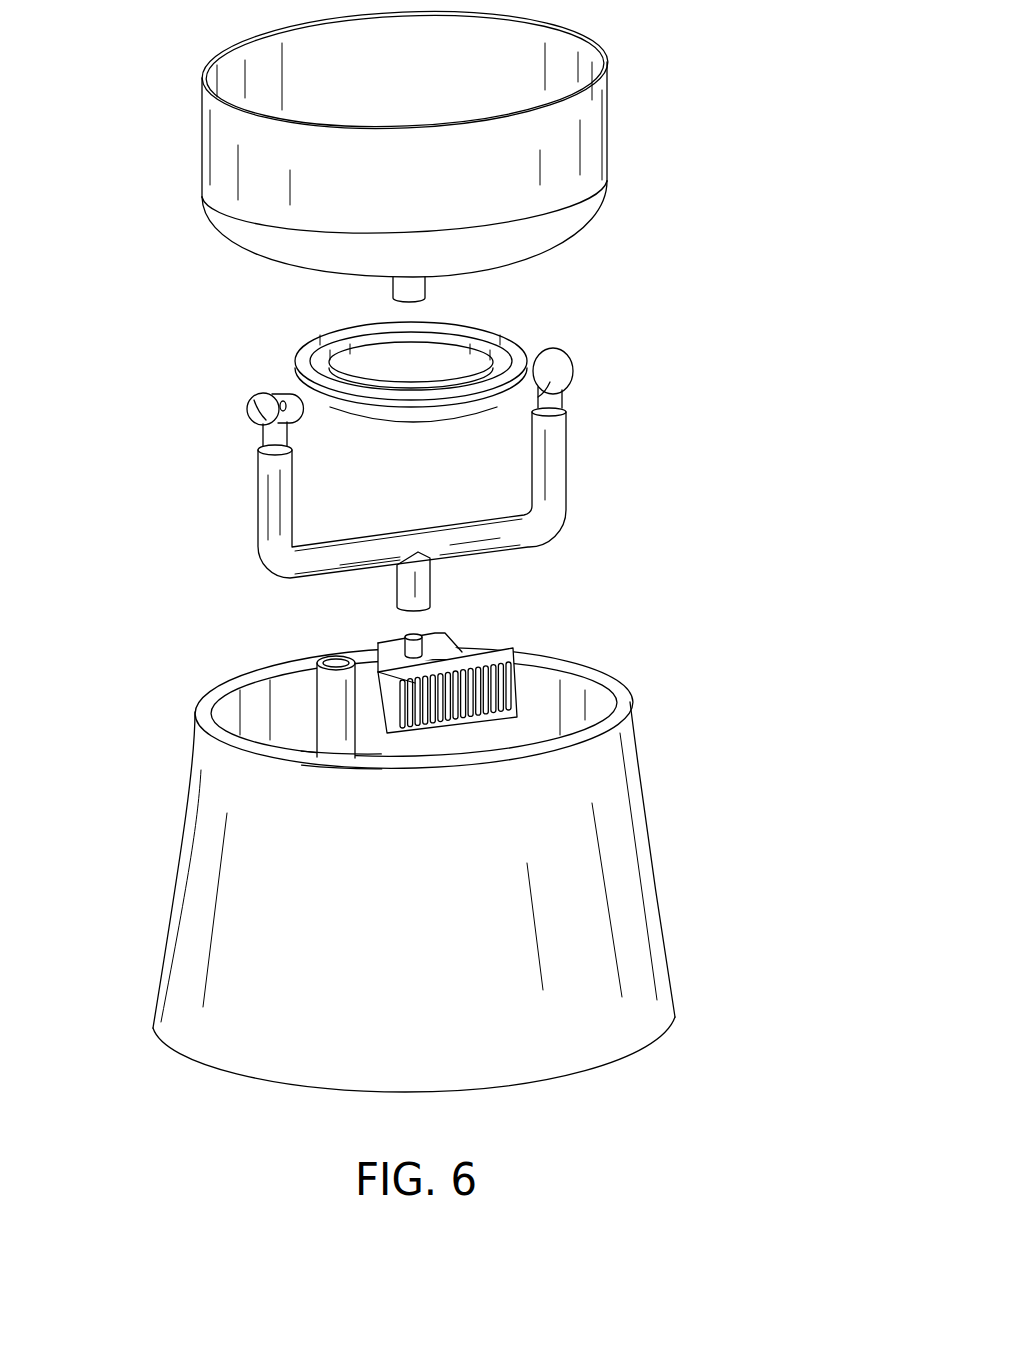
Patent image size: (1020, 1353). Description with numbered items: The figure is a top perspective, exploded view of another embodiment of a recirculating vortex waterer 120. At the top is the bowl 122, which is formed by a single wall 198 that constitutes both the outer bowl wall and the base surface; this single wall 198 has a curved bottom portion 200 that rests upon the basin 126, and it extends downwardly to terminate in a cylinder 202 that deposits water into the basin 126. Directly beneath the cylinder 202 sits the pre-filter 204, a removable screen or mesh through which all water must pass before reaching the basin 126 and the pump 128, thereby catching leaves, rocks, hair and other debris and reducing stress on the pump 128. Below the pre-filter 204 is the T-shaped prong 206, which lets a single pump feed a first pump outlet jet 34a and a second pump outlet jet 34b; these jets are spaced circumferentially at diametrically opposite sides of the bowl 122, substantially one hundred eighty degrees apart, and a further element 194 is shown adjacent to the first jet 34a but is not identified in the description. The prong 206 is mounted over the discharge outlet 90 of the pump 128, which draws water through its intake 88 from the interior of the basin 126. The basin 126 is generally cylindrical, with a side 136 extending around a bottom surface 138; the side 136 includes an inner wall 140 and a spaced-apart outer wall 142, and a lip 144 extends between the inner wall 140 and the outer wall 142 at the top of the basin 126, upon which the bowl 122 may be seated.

The bowl 122 is at (612, 118).
The single wall 198 is at (225, 155).
The curved bottom portion 200 is at (257, 235).
The cylinder 202 is at (424, 291).
The pre-filter 204 is at (518, 326).
The waterer 120 is at (682, 388).
The pivot elbow 194 is at (272, 400).
The first pump outlet jet 34a is at (257, 414).
The second pump outlet jet 34b is at (567, 390).
The T-shaped prong 206 is at (550, 532).
The discharge outlet 90 is at (410, 632).
The intake 88 is at (400, 650).
The pump 128 is at (511, 646).
The inner wall 140 is at (590, 703).
The lip 144 is at (199, 713).
The basin 126 is at (649, 806).
The side 136 is at (197, 890).
The outer wall 142 is at (196, 978).
The bottom surface 138 is at (203, 1070).